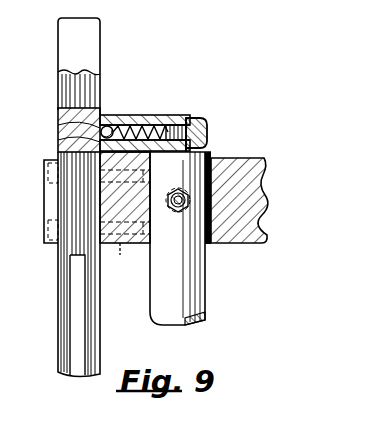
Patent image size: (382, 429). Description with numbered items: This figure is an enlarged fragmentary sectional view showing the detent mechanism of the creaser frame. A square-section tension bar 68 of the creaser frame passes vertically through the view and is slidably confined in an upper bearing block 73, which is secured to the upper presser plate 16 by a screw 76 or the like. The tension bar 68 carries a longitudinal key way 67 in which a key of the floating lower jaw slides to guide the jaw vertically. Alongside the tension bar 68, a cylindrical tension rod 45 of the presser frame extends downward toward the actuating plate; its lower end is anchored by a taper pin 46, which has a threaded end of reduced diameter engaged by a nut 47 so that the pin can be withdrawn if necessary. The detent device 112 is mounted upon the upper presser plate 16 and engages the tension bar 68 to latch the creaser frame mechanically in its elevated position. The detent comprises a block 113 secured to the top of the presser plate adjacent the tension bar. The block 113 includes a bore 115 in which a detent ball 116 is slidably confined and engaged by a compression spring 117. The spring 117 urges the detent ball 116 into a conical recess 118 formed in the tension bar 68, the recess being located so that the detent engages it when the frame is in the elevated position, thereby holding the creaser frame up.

The tension bar 68 is at (85, 42).
The conical recess 118 is at (96, 130).
The detent device 112 is at (152, 112).
The bore 115 is at (130, 125).
The detent ball 116 is at (100, 135).
The compression spring 117 is at (186, 122).
The block 113 is at (200, 118).
The upper presser plate 16 is at (250, 178).
The tension rod 45 is at (194, 300).
The nut 47 is at (180, 189).
The taper pin 46 is at (176, 212).
The upper bearing block 73 is at (44, 202).
The key way 67 is at (78, 340).
The screw 76 is at (120, 250).